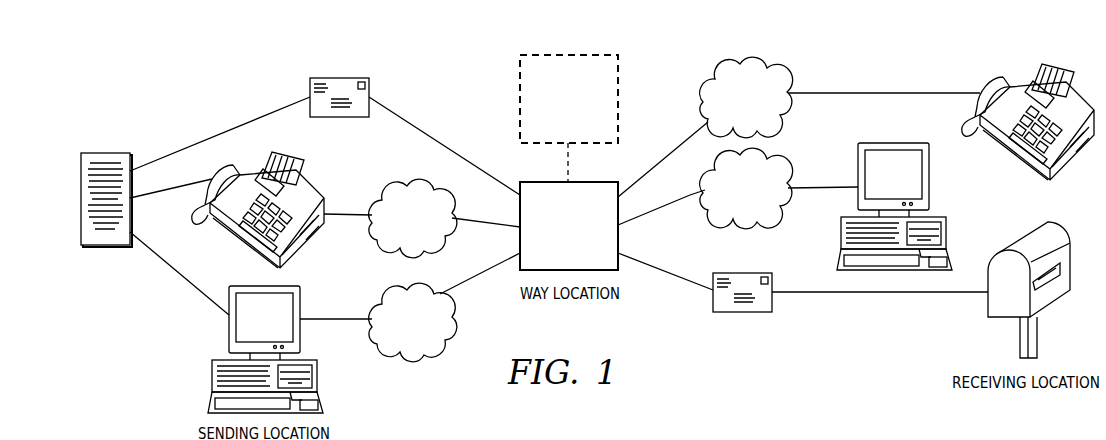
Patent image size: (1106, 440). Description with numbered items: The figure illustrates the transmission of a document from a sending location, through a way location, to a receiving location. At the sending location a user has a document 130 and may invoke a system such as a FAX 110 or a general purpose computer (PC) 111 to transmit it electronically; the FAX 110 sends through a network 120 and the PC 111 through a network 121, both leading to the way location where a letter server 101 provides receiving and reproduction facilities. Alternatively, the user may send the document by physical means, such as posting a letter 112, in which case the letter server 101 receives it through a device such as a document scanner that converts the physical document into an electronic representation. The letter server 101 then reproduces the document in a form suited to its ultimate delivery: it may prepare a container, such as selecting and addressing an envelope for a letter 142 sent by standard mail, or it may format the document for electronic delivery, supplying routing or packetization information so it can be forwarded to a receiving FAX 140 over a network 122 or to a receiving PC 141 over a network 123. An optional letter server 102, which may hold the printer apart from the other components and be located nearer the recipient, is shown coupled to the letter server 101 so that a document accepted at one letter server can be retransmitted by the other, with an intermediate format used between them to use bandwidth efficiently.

The letter server 101 is at (618, 235).
The optional letter server 102 is at (618, 90).
The FAX 110 is at (300, 243).
The general purpose computer (PC) 111 is at (212, 375).
The letter 112 is at (353, 117).
The network 120 is at (427, 229).
The network 121 is at (427, 333).
The network 122 is at (760, 199).
The network 123 is at (760, 108).
The document 130 is at (106, 153).
The receiving FAX 140 is at (1010, 145).
The PC 141 is at (945, 235).
The letter 142 is at (752, 310).